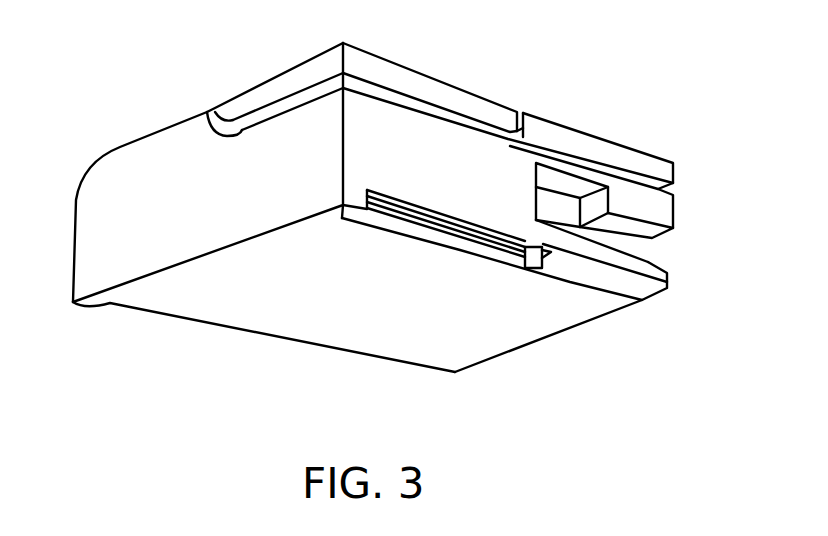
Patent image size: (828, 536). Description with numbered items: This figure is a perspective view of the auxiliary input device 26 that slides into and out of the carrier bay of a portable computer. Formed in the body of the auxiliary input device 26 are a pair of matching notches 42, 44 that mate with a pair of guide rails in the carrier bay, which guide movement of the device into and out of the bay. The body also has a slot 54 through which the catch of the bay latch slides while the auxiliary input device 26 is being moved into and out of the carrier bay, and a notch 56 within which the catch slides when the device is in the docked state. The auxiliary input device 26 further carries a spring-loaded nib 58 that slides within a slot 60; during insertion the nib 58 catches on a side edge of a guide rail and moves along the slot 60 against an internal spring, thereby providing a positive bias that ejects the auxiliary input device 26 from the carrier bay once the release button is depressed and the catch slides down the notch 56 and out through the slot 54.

The auxiliary input device 26 is at (133, 61).
The notch 42 is at (643, 301).
The notch 44 is at (137, 312).
The slot 54 is at (650, 249).
The notch 56 is at (558, 196).
The spring-loaded nib 58 is at (527, 272).
The slot 60 is at (402, 173).